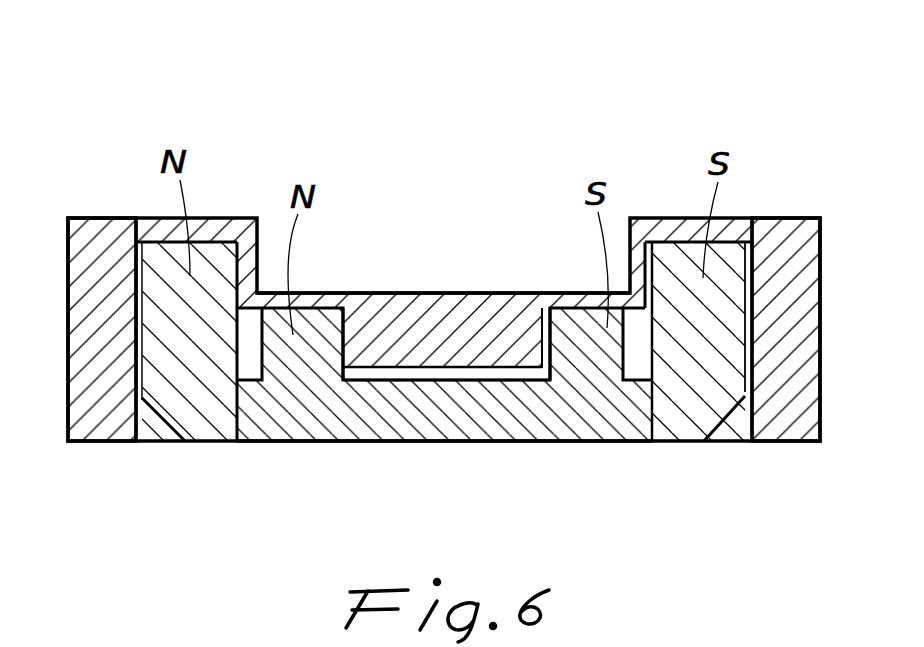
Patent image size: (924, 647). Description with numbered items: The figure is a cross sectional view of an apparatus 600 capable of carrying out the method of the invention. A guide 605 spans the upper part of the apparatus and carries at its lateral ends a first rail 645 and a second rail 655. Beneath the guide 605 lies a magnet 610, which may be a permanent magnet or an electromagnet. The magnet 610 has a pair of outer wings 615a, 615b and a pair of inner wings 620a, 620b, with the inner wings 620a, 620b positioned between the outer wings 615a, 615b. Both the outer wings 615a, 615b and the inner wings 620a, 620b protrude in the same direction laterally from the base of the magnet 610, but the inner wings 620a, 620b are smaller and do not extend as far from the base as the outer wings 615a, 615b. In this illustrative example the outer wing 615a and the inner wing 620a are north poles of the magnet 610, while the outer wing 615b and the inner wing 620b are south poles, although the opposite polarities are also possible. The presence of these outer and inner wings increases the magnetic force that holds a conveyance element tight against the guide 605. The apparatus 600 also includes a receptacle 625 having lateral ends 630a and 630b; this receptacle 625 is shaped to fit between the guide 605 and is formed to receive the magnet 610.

The apparatus 600 is at (120, 155).
The guide 605 is at (408, 325).
The magnet 610 is at (448, 416).
The outer wing 615a is at (187, 320).
The outer wing 615b is at (700, 310).
The inner wing 620a is at (313, 338).
The inner wing 620b is at (585, 345).
The receptacle 625 is at (455, 375).
The lateral end 630a is at (147, 408).
The lateral end 630b is at (744, 412).
The first rail 645 is at (96, 387).
The second rail 655 is at (783, 272).